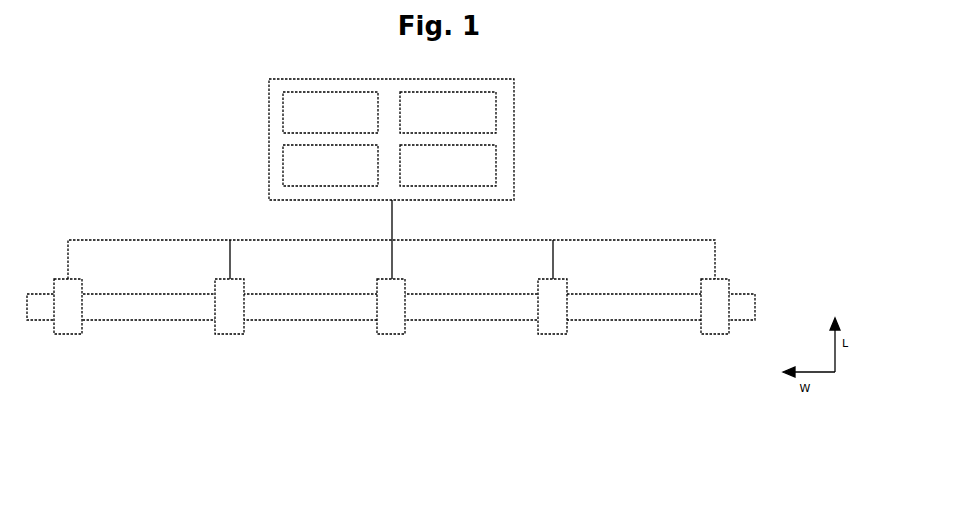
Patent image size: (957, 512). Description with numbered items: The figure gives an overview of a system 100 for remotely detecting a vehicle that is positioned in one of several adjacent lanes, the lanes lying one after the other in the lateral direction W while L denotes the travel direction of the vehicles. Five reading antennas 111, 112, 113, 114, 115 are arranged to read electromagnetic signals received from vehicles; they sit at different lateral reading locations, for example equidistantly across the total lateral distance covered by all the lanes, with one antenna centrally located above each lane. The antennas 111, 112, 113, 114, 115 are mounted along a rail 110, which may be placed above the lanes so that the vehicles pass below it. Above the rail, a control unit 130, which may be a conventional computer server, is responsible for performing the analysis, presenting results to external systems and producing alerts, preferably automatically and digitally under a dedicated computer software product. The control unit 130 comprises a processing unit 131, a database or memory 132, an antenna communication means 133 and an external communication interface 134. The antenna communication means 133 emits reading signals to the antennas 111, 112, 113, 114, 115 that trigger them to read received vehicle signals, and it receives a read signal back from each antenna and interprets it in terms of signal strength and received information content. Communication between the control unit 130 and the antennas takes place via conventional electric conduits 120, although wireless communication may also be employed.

The system 100 is at (775, 247).
The rail 110 is at (457, 320).
The reading antenna 111 is at (70, 334).
The reading antenna 112 is at (232, 334).
The reading antenna 113 is at (392, 334).
The reading antenna 114 is at (555, 334).
The reading antenna 115 is at (717, 334).
The electric conduits 120 is at (553, 240).
The control unit 130 is at (514, 172).
The processing unit 131 is at (330, 112).
The database or memory 132 is at (448, 112).
The antenna communication means 133 is at (330, 165).
The external communication interface 134 is at (448, 165).